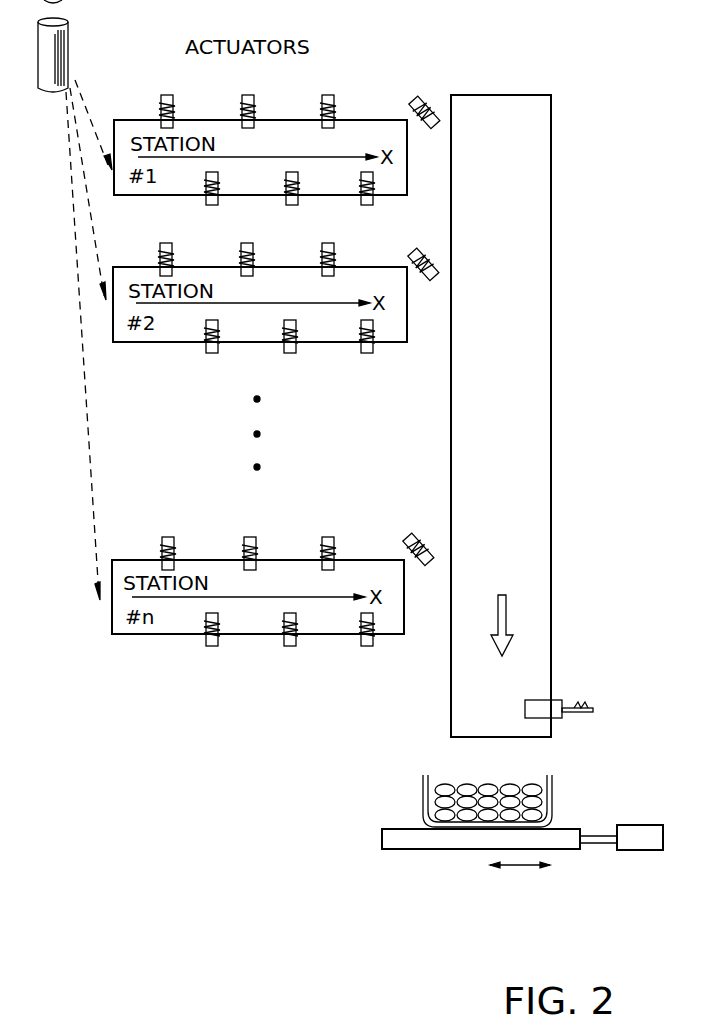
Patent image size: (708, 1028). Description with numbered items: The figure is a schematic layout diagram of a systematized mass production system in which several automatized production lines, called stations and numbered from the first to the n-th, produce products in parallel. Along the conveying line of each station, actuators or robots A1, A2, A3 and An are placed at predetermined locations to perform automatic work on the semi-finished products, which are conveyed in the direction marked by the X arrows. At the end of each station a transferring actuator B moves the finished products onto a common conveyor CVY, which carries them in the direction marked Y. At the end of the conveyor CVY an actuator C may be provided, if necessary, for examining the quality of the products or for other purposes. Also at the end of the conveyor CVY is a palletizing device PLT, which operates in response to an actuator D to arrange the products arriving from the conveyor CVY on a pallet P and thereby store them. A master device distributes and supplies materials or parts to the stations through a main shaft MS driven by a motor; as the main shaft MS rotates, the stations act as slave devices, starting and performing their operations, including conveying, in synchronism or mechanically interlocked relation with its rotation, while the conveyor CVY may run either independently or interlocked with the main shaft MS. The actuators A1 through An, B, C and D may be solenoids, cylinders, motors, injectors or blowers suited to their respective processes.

The main shaft MS is at (68, 42).
The actuator A1 is at (186, 354).
The actuator A2 is at (267, 354).
The actuator A3 is at (329, 316).
The actuator An is at (367, 421).
The transferring actuator B is at (418, 93).
The conveyor CVY is at (544, 181).
The actuator C is at (563, 702).
The pallet P is at (575, 783).
The palletizing device PLT is at (448, 840).
The actuator D is at (640, 823).